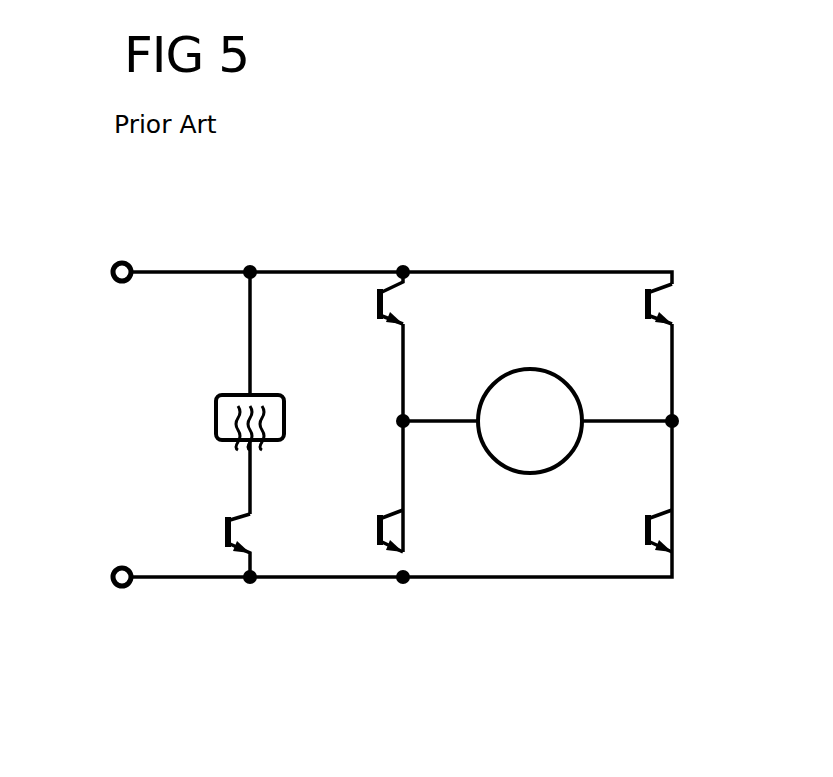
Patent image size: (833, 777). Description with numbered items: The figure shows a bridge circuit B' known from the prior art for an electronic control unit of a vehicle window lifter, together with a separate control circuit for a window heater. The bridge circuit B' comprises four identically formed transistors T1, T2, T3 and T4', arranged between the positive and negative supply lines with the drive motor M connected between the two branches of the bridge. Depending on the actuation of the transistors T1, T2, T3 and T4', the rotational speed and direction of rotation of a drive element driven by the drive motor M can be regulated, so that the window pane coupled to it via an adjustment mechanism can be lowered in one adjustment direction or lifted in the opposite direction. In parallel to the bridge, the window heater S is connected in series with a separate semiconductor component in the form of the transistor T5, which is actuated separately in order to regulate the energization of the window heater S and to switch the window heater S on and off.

The transistor T1 is at (380, 303).
The transistor T2 is at (648, 303).
The transistor T3 is at (648, 530).
The transistor T4' is at (362, 531).
The transistor T5 is at (228, 531).
The window heater S is at (233, 454).
The drive motor M is at (530, 421).
The bridge circuit B' is at (741, 654).